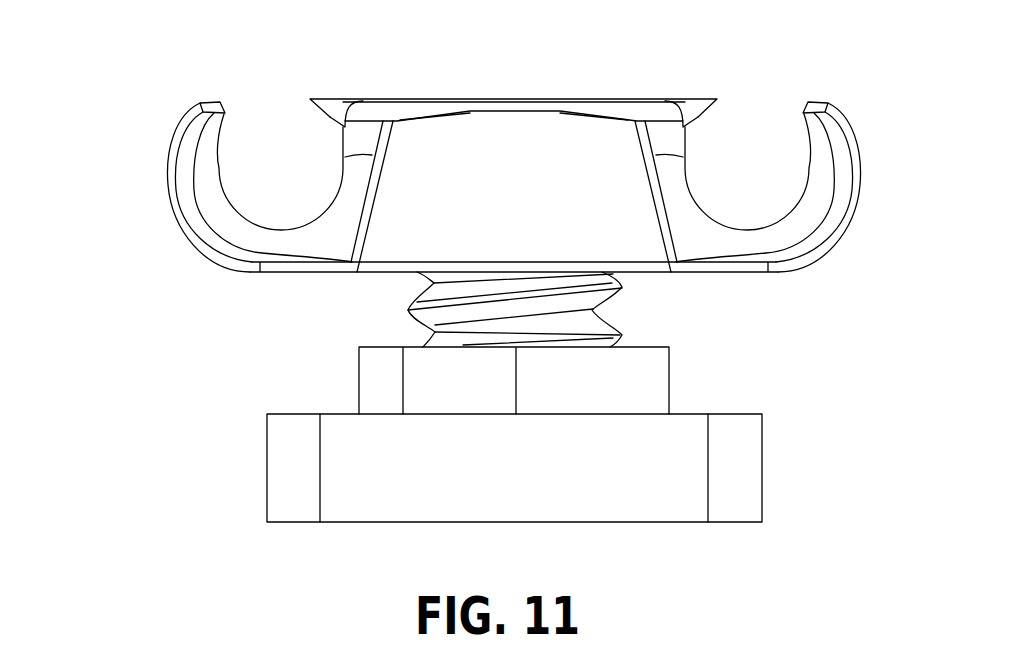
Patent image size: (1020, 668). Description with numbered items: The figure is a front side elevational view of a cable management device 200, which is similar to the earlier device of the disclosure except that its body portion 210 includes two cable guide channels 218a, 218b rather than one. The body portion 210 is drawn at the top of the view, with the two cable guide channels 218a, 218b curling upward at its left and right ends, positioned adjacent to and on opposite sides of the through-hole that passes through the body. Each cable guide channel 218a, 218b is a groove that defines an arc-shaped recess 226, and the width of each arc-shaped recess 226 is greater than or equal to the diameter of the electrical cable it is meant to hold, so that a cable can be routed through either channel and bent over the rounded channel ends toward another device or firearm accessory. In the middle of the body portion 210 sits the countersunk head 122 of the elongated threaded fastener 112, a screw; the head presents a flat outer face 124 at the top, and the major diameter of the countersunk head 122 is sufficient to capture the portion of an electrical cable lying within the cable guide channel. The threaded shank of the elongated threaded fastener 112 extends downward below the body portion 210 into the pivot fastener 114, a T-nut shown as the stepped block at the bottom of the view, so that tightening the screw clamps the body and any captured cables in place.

The cable management device 200 is at (150, 98).
The body portion 210 is at (250, 256).
The first cable guide channel 218a is at (257, 86).
The second cable guide channel 218b is at (767, 90).
The arc-shaped recess 226 is at (305, 182).
The countersunk head 122 is at (712, 112).
The flat outer face 124 is at (691, 99).
The elongated threaded fastener 112 is at (406, 313).
The pivot fastener 114 is at (290, 455).